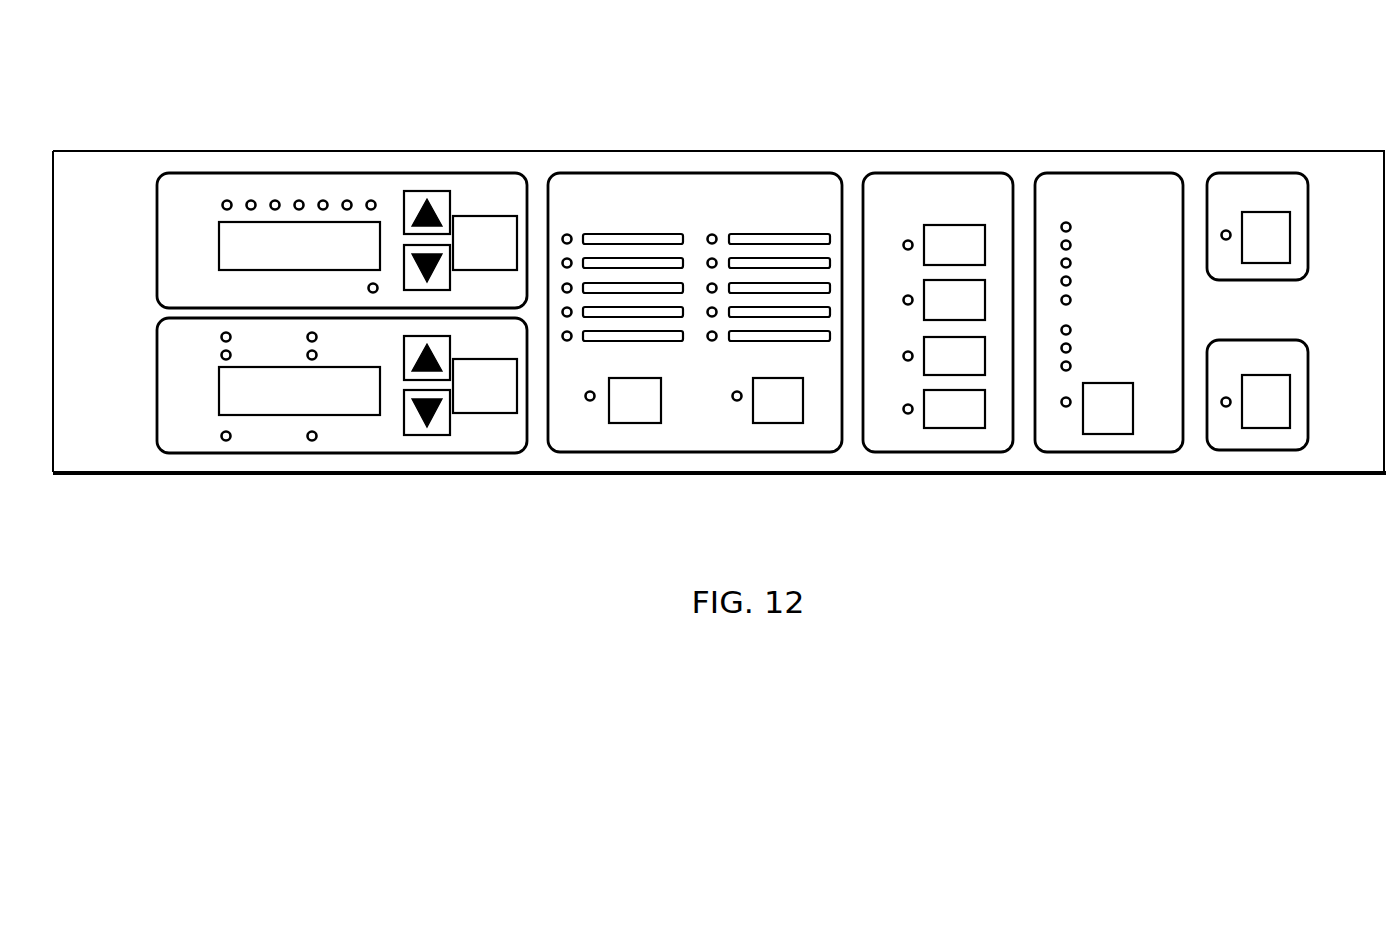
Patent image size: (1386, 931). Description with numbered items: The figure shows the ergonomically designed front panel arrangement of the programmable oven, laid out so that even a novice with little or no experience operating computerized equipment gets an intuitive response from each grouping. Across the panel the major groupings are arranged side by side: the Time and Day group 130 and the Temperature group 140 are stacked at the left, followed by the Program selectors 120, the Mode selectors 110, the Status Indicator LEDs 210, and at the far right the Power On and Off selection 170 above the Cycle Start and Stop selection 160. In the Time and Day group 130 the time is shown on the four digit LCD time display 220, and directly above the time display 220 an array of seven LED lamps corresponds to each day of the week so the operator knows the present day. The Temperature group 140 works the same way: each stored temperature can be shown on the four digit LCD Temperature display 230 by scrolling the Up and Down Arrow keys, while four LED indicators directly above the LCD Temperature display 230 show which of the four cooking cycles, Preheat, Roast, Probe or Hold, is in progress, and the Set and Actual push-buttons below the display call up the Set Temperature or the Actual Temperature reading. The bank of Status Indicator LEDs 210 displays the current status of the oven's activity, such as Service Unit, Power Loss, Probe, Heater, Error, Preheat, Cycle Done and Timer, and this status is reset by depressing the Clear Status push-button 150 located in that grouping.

The Mode selectors 110 is at (930, 172).
The Program selectors 120 is at (668, 172).
The Time and Day group 130 is at (373, 176).
The Temperature group 140 is at (418, 451).
The Clear Status push-button 150 is at (1112, 434).
The Cycle Start and Stop selection 160 is at (1263, 451).
The Power On and Off selection 170 is at (1242, 172).
The Status Indicator LEDs 210 is at (1109, 302).
The LCD time display 220 is at (219, 243).
The LCD Temperature display 230 is at (278, 416).